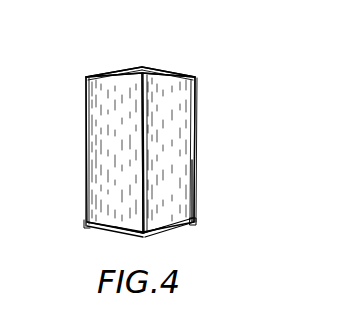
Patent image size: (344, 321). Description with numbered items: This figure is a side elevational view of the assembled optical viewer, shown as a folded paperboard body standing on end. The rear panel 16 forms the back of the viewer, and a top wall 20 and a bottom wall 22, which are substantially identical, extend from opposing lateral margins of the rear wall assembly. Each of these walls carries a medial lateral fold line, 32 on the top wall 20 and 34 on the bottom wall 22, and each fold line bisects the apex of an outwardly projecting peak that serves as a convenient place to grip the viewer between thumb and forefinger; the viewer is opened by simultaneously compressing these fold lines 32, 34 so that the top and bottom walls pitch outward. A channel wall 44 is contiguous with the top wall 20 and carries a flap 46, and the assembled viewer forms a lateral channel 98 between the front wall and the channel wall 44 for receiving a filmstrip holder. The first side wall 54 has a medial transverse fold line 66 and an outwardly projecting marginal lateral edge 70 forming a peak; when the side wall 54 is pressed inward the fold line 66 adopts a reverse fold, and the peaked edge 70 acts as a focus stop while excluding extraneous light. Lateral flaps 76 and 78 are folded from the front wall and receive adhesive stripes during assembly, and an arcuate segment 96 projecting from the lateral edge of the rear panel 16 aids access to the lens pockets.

The rear panel 16 is at (86, 127).
The top wall 20 is at (174, 73).
The bottom wall 22 is at (112, 232).
The medial lateral fold line 32 is at (144, 68).
The medial lateral fold line 34 is at (133, 236).
The channel wall 44 is at (197, 92).
The flap 46 is at (172, 228).
The first side wall 54 is at (178, 196).
The medial transverse fold line 66 is at (145, 145).
The marginal lateral edge 70 is at (158, 75).
The lateral flap 76 is at (166, 72).
The lateral flap 78 is at (192, 224).
The arcuate segment 96 is at (88, 228).
The lateral channel 98 is at (197, 181).